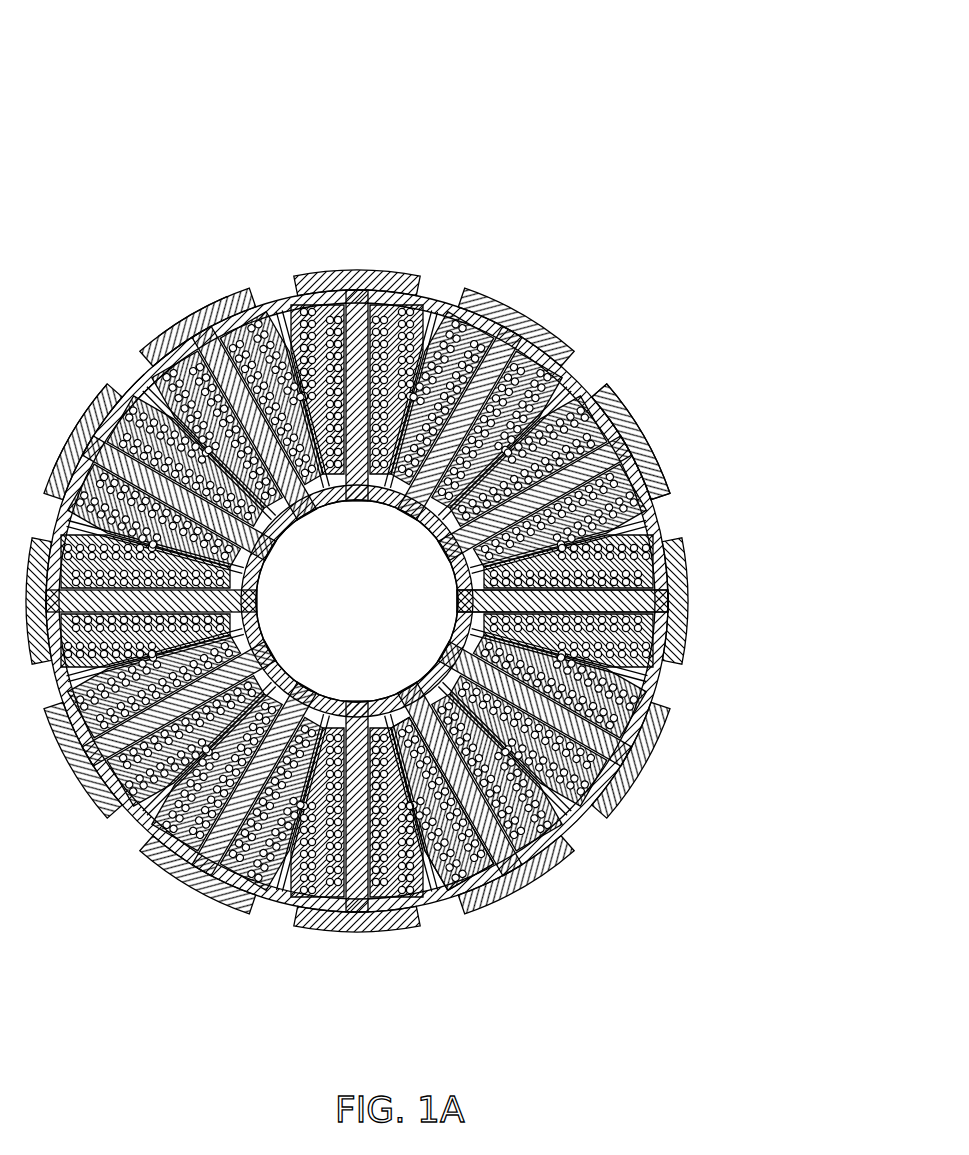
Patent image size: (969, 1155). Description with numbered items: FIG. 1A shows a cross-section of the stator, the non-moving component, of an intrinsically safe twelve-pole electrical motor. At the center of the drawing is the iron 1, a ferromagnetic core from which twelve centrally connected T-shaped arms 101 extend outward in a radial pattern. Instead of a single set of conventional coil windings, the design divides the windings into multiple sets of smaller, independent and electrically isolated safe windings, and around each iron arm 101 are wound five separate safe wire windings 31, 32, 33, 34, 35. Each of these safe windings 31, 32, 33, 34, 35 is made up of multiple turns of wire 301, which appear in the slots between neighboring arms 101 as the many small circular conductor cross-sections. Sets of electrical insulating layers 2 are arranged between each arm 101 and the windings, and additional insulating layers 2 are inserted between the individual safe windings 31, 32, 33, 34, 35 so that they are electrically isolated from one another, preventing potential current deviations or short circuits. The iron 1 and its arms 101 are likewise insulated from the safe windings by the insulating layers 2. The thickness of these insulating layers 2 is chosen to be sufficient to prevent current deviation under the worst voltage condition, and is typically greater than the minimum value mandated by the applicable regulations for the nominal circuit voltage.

The iron 1 is at (640, 417).
The arm 101 is at (645, 425).
The wire 301 is at (663, 635).
The electrical insulating layer 2 is at (525, 872).
The safe wire winding 31 is at (102, 392).
The safe wire winding 32 is at (135, 378).
The safe wire winding 33 is at (157, 363).
The safe wire winding 34 is at (182, 333).
The safe wire winding 35 is at (218, 300).